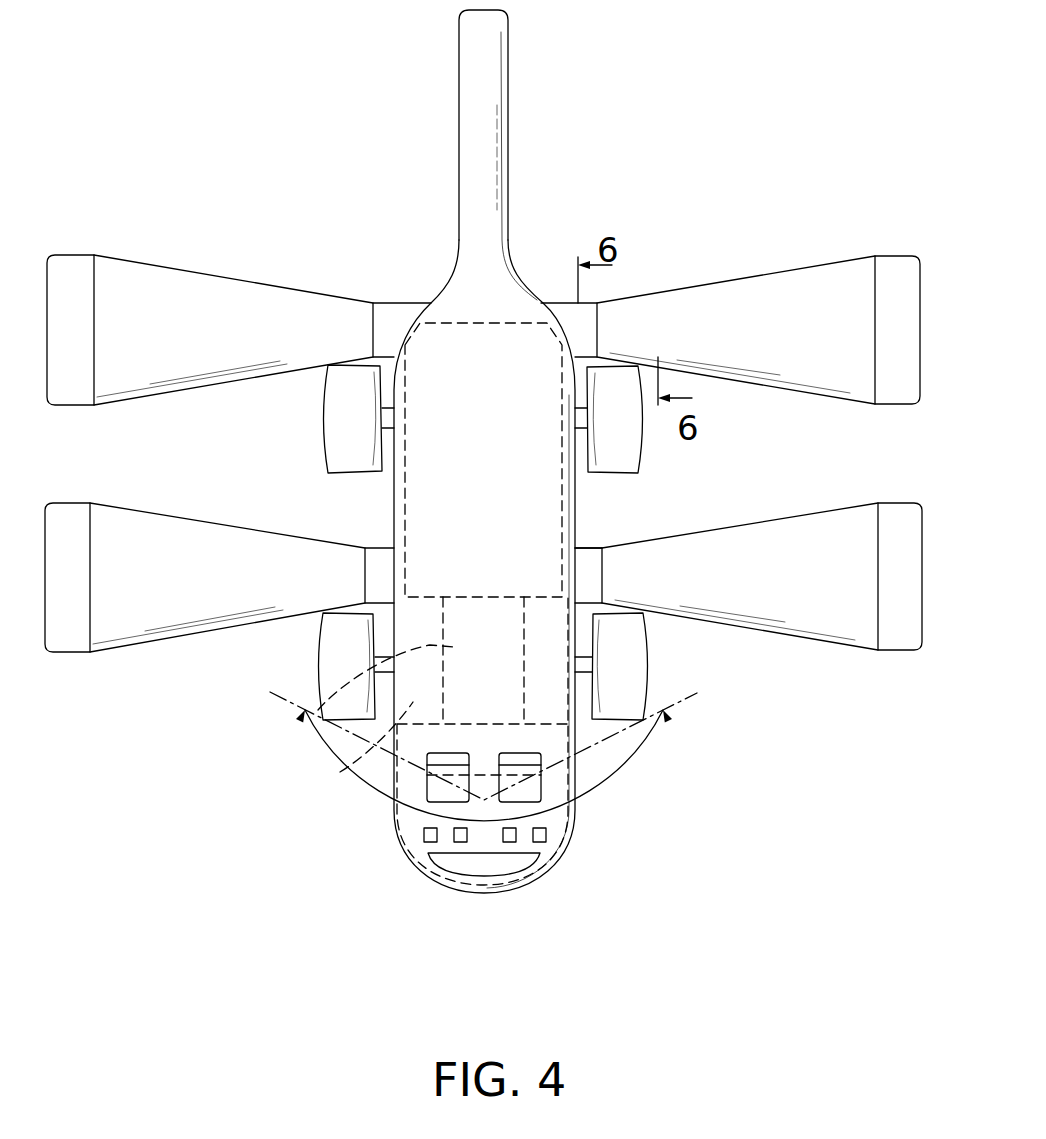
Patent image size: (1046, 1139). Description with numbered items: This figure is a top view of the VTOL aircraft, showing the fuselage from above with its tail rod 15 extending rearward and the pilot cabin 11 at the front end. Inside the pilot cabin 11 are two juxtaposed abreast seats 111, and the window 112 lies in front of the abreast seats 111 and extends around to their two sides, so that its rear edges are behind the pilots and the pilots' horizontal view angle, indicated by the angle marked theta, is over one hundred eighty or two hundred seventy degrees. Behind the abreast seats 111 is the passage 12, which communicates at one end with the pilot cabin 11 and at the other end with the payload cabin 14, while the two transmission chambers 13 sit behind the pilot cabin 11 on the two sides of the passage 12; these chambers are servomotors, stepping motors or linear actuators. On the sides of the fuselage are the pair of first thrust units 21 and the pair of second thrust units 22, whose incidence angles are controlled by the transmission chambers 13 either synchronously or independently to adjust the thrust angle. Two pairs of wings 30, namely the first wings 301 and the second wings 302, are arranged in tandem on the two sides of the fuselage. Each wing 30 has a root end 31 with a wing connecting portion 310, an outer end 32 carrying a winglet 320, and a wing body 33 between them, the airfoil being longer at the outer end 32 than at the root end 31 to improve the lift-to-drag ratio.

The pilot cabin 11 is at (512, 895).
The abreast seats 111 is at (537, 783).
The window 112 is at (562, 864).
The passage 12 is at (303, 711).
The transmission chambers 13 is at (358, 766).
The payload cabin 14 is at (412, 489).
The tail rod 15 is at (462, 138).
The first thrust units 21 is at (318, 648).
The second thrust units 22 is at (327, 422).
The wing 30 is at (771, 593).
The first wings 301 is at (827, 522).
The second wings 302 is at (765, 287).
The root end 31 is at (590, 540).
The wing connecting portion 310 is at (598, 575).
The outer end 32 is at (905, 578).
The winglet 320 is at (900, 512).
The wing body 33 is at (742, 630).